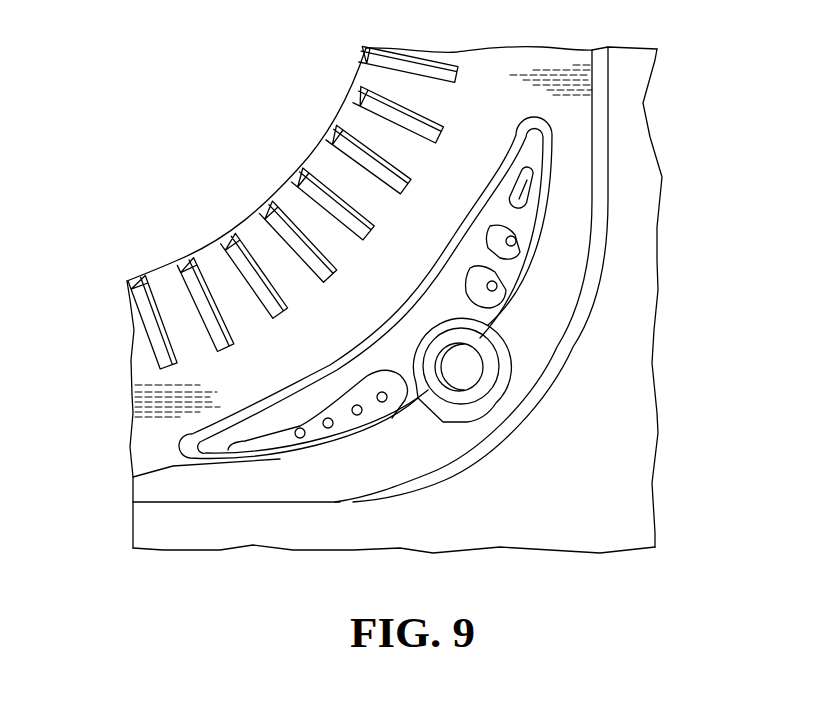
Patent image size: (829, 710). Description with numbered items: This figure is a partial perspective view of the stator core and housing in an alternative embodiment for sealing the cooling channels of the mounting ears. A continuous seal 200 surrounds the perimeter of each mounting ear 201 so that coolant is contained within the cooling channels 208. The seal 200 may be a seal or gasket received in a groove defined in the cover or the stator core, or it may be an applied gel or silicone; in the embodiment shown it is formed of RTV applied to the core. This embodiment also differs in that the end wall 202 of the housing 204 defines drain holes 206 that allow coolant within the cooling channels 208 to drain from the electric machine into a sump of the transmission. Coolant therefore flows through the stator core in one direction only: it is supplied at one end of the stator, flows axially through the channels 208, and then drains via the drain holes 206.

The continuous seal 200 is at (547, 187).
The mounting ear 201 is at (456, 416).
The end wall 202 is at (285, 438).
The housing 204 is at (178, 525).
The drain holes 206 is at (514, 247).
The cooling channels 208 is at (497, 300).